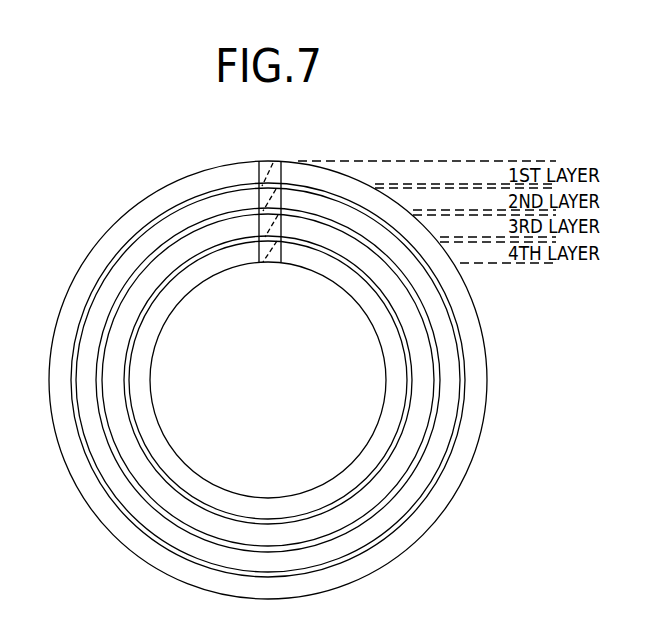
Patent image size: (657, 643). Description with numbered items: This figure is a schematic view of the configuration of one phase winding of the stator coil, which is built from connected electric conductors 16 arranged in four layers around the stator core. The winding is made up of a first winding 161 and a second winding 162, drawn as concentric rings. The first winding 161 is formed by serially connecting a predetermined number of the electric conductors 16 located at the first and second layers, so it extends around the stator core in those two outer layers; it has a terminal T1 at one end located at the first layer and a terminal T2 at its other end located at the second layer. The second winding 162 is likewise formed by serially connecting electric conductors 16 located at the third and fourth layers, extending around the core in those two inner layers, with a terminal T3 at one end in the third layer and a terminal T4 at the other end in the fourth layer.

The electric conductors 16 is at (255, 380).
The first winding 161 is at (155, 238).
The second winding 162 is at (385, 477).
The terminal T1 is at (273, 162).
The terminal T2 is at (260, 178).
The terminal T3 is at (278, 262).
The terminal T4 is at (270, 262).